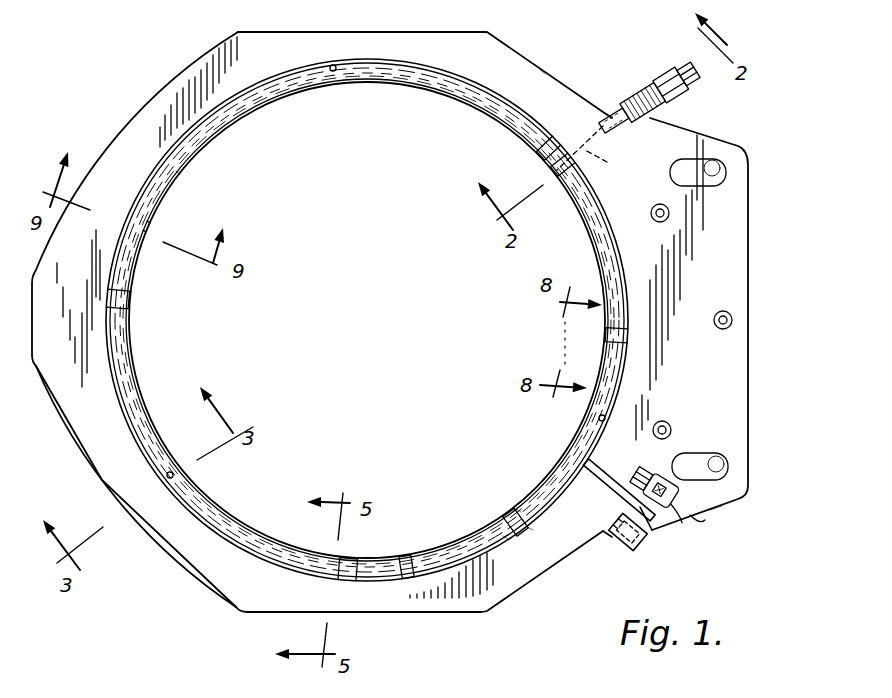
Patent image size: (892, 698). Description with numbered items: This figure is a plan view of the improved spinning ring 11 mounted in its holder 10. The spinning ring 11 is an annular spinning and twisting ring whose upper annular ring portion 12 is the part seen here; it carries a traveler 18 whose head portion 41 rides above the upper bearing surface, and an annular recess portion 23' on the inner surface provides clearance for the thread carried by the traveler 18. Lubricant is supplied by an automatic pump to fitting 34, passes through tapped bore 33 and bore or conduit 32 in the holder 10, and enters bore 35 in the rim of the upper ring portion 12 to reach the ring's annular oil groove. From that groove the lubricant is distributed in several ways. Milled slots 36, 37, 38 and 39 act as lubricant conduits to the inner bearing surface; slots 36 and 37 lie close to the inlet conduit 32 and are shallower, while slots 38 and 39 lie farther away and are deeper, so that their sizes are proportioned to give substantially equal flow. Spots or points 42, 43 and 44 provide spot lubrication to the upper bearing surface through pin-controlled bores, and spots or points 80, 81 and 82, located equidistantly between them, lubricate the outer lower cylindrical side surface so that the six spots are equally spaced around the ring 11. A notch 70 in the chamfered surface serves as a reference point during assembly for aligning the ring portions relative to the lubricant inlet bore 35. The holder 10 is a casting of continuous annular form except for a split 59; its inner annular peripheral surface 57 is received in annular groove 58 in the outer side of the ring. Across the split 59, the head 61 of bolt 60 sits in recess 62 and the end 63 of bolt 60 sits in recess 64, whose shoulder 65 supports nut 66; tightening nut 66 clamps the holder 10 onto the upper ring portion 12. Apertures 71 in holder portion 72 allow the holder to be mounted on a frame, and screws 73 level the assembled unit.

The holder 10 is at (547, 70).
The spinning ring 11 is at (452, 82).
The upper annular ring portion 12 is at (242, 545).
The traveler 18 is at (507, 513).
The annular recess portion 23' is at (210, 181).
The bore or conduit 32 is at (611, 163).
The tapped bore 33 is at (600, 126).
The fitting 34 is at (663, 83).
The bore 35 is at (563, 178).
The slot 36 is at (383, 80).
The slot 37 is at (606, 335).
The slot 38 is at (349, 564).
The slot 39 is at (131, 300).
The head portion 41 is at (518, 512).
The spot or point 42 is at (334, 72).
The spot or point 43 is at (598, 420).
The spot or point 44 is at (174, 476).
The inner annular peripheral surface 57 is at (531, 528).
The annular groove 58 is at (505, 537).
The split 59 is at (593, 482).
The bolt 60 is at (657, 523).
The head 61 is at (612, 538).
The recess 62 is at (617, 545).
The end 63 is at (722, 507).
The recess 64 is at (700, 516).
The shoulder 65 is at (638, 472).
The nut 66 is at (662, 465).
The notch 70 is at (207, 513).
The apertures 71 is at (716, 168).
The holder portion 72 is at (735, 353).
The screws 73 is at (670, 215).
The spot or point 80 is at (150, 226).
The spot or point 81 is at (540, 147).
The spot or point 82 is at (410, 565).